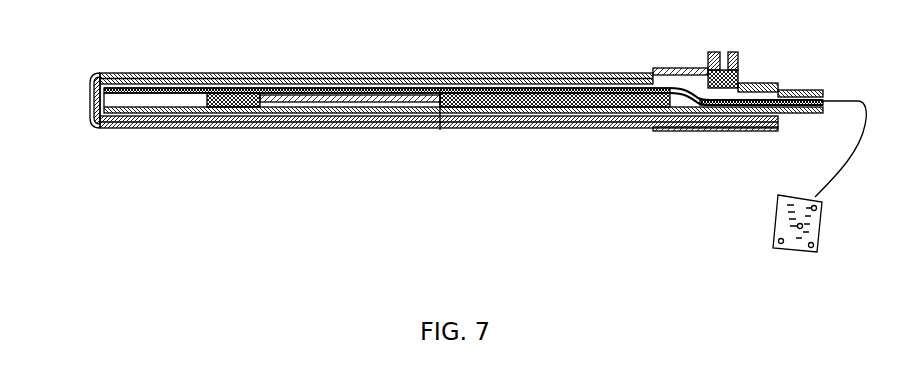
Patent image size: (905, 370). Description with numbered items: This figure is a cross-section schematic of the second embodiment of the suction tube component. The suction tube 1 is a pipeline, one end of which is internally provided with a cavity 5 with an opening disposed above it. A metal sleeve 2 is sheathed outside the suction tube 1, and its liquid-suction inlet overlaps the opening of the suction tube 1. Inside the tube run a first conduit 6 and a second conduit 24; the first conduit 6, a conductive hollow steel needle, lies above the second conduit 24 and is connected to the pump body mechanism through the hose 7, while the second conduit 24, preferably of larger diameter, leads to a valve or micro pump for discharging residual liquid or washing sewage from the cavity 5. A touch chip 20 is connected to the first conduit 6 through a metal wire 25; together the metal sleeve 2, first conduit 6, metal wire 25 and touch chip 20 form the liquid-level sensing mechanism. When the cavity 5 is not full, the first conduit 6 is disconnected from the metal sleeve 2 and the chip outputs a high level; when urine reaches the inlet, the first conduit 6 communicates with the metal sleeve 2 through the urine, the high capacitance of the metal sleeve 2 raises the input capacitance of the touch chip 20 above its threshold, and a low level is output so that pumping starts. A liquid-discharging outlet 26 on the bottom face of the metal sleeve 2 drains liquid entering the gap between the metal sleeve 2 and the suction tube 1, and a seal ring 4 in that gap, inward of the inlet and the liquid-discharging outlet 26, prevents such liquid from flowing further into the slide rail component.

The suction tube 1 is at (255, 74).
The metal sleeve 2 is at (88, 92).
The seal ring 4 is at (247, 128).
The cavity 5 is at (175, 100).
The first conduit 6 is at (190, 74).
The hose 7 is at (800, 85).
The touch chip 20 is at (770, 232).
The second conduit 24 is at (130, 130).
The metal wire 25 is at (440, 128).
The liquid-discharging outlet 26 is at (110, 128).